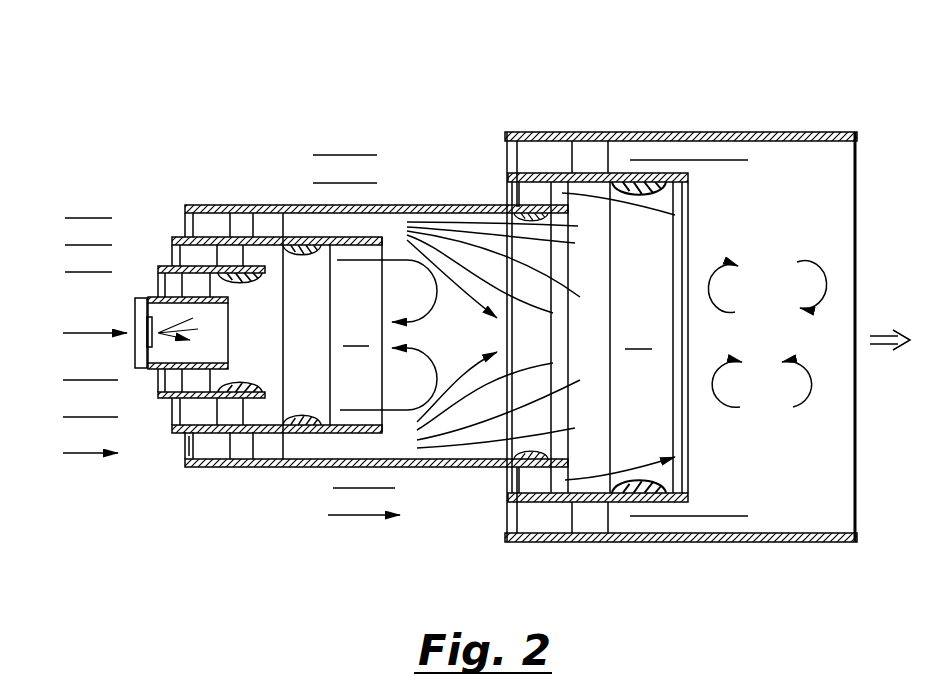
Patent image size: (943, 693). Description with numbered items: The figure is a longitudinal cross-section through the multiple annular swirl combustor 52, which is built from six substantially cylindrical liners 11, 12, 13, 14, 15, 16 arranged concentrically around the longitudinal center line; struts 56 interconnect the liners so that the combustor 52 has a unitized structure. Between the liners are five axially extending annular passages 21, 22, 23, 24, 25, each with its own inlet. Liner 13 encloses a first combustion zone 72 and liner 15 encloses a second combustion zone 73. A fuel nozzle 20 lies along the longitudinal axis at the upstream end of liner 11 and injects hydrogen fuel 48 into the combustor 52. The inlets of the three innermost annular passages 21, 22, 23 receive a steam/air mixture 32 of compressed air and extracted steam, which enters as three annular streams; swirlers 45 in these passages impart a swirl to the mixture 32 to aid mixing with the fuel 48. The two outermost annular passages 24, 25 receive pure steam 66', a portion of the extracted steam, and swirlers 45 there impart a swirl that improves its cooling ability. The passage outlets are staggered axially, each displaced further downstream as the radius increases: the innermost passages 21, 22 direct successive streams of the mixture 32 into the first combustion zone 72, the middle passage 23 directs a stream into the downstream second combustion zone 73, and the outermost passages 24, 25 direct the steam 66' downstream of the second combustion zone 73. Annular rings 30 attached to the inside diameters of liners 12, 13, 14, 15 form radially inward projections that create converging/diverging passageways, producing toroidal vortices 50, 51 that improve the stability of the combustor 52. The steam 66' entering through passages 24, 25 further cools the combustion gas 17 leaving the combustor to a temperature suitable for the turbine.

The liner 11 is at (153, 370).
The liner 12 is at (165, 403).
The liner 13 is at (170, 443).
The liner 14 is at (218, 462).
The liner 15 is at (530, 498).
The liner 16 is at (533, 543).
The combustion gas 17 is at (880, 334).
The fuel nozzle 20 is at (135, 355).
The annular passage 21 is at (173, 287).
The annular passage 22 is at (190, 257).
The annular passage 23 is at (208, 223).
The annular passage 24 is at (518, 193).
The annular passage 25 is at (527, 157).
The annular ring 30 is at (240, 390).
The steam/air mixture 32 is at (80, 218).
The swirler 45 is at (263, 223).
The hydrogen fuel 48 is at (100, 332).
The toroidal vortex 50 is at (430, 300).
The toroidal vortex 51 is at (718, 268).
The multiple annular swirl combustor 52 is at (463, 88).
The strut 56 is at (185, 445).
The steam 66' is at (341, 311).
The first combustion zone 72 is at (332, 336).
The second combustion zone 73 is at (641, 337).